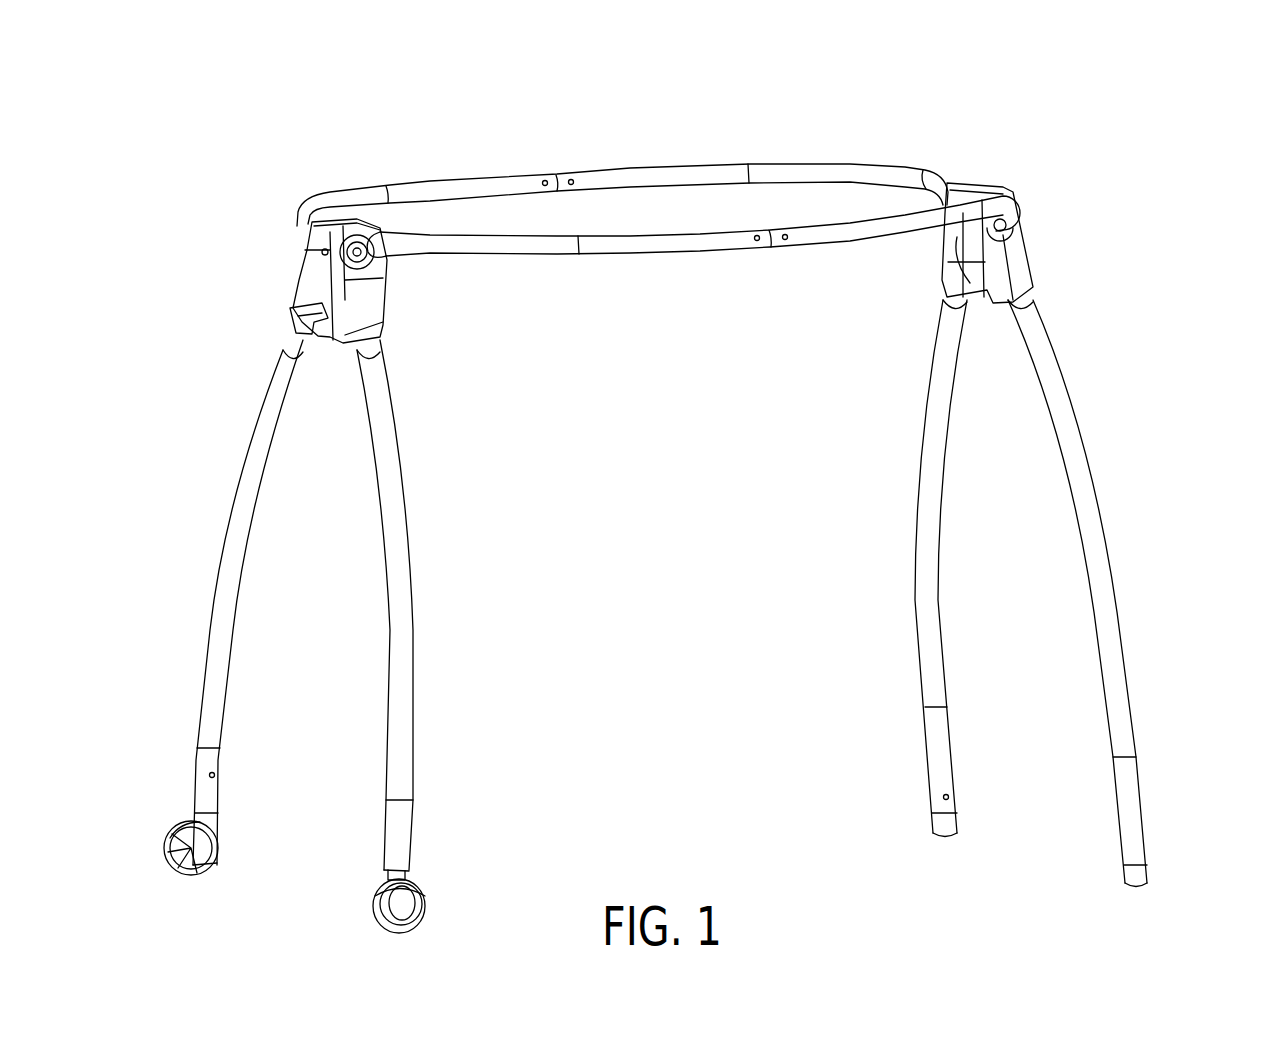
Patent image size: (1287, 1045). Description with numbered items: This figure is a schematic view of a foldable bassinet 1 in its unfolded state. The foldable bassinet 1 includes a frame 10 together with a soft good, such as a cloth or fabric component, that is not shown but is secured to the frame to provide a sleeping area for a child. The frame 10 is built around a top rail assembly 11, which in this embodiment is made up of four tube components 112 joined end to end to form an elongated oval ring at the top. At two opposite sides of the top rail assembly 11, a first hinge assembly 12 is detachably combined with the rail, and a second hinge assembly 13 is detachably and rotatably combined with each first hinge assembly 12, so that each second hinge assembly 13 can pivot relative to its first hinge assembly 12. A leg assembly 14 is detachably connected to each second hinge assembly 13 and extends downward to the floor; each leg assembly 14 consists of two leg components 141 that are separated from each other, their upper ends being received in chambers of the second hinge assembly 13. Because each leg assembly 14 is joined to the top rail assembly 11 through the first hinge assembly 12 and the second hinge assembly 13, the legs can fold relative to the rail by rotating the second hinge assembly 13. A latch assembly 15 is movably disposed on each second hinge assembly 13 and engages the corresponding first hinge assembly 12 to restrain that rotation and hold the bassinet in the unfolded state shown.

The foldable bassinet 1 is at (685, 480).
The frame 10 is at (675, 213).
The top rail assembly 11 is at (666, 226).
The tube component 112 is at (893, 173).
The first hinge assembly 12 is at (322, 253).
The second hinge assembly 13 is at (659, 263).
The leg assembly 14 is at (671, 616).
The leg component 141 is at (227, 637).
The latch assembly 15 is at (297, 305).